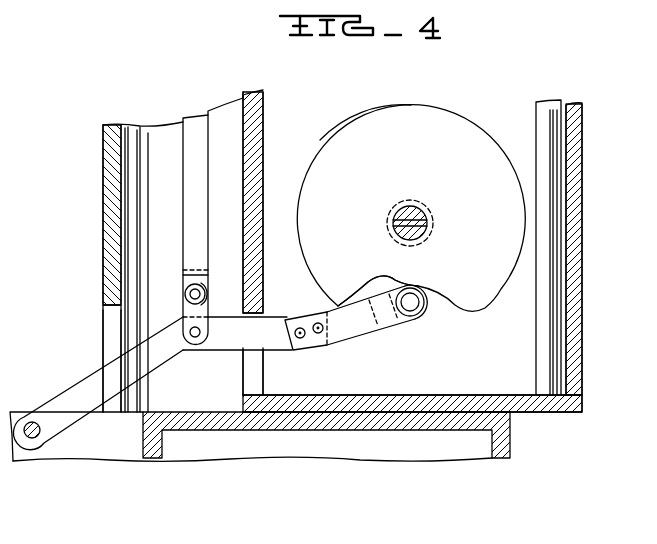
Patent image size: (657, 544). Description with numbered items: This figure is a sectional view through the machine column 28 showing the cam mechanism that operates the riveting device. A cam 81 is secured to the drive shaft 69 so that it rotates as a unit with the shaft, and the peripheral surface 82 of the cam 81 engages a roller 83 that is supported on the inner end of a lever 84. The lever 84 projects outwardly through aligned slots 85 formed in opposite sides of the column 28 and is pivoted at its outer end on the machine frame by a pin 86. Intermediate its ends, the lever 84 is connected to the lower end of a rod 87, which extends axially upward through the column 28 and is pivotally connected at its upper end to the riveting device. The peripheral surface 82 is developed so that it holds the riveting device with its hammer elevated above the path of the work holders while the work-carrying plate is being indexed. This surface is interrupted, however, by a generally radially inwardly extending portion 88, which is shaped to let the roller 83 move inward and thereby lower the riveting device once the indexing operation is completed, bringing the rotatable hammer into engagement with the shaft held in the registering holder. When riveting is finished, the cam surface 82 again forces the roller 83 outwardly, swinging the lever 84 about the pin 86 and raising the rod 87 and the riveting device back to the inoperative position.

The column 28 is at (110, 263).
The drive shaft 69 is at (428, 212).
The cam 81 is at (420, 114).
The peripheral surface 82 is at (345, 122).
The roller 83 is at (421, 318).
The lever 84 is at (217, 349).
The slots 85 is at (112, 337).
The pin 86 is at (42, 437).
The rod 87 is at (206, 230).
The radially inwardly extending portion 88 is at (398, 280).